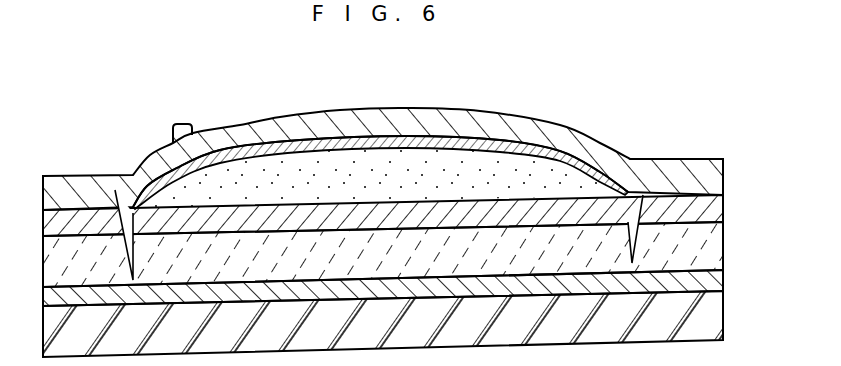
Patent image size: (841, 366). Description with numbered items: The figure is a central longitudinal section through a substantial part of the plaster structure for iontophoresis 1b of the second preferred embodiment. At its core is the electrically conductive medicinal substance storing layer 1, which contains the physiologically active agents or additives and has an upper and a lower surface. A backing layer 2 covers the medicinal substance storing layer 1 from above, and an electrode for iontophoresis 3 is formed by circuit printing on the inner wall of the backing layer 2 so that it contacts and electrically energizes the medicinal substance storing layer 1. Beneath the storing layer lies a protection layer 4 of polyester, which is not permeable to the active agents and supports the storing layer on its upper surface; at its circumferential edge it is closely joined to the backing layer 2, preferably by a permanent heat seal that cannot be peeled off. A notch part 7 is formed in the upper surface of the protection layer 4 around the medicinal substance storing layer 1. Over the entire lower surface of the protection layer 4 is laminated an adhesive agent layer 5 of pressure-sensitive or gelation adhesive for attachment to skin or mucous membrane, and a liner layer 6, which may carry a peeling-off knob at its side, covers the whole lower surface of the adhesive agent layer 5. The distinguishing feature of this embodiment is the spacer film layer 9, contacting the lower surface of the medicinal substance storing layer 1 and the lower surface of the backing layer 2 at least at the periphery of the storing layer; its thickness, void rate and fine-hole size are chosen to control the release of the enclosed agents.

The medicinal substance storing layer 1 is at (452, 170).
The plaster structure for iontophoresis 1b is at (216, 107).
The backing layer 2 is at (702, 170).
The electrode for iontophoresis 3 is at (568, 152).
The protection layer 4 is at (707, 245).
The adhesive agent layer 5 is at (712, 282).
The liner layer 6 is at (710, 315).
The notch part 7 is at (115, 190).
The spacer film layer 9 is at (707, 208).